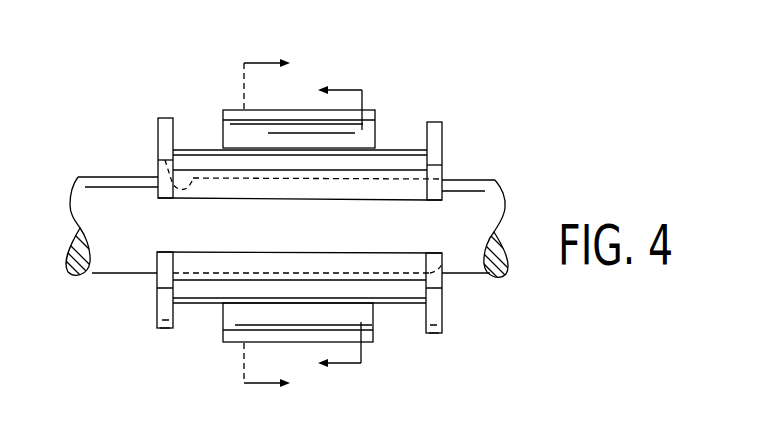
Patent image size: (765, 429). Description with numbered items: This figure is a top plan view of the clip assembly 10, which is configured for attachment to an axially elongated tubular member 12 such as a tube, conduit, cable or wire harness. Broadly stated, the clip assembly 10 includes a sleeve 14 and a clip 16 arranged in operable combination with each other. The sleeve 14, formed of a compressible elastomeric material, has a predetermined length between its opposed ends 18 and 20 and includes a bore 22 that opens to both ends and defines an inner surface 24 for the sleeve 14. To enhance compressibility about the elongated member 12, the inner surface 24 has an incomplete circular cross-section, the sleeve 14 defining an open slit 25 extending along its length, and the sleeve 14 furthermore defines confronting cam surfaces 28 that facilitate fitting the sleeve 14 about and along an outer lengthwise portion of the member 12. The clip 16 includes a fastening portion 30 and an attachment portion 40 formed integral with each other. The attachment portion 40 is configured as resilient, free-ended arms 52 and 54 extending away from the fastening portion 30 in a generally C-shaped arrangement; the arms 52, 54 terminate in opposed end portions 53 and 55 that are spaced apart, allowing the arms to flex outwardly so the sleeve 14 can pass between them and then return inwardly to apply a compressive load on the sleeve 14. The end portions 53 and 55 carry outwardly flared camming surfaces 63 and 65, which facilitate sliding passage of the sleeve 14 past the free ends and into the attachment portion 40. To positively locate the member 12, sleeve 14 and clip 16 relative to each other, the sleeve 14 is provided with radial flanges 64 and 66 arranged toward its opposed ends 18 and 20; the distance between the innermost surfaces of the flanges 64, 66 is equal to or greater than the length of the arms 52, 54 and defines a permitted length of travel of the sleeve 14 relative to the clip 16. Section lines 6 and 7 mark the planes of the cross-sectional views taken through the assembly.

The section line 6- 6 is at (259, 226).
The section line 7- 7 is at (348, 227).
The clip assembly 10 is at (453, 111).
The elongated tubular member 12 is at (121, 276).
The sleeve 14 is at (139, 141).
The clip 16 is at (233, 366).
The end of sleeve 18 is at (155, 308).
The end of sleeve 20 is at (443, 143).
The bore 22 is at (160, 147).
The inner surface 24 is at (443, 276).
The slit 25 is at (177, 202).
The cam surface 28 is at (388, 187).
The fastening portion 30 is at (363, 270).
The attachment portion 40 is at (312, 98).
The arm 52 is at (261, 132).
The end portion 53 is at (373, 112).
The arm 54 is at (263, 345).
The end portion 55 is at (310, 342).
The camming surface 63 is at (232, 133).
The radial flange 64 is at (167, 330).
The camming surface 65 is at (237, 320).
The radial flange 66 is at (435, 334).